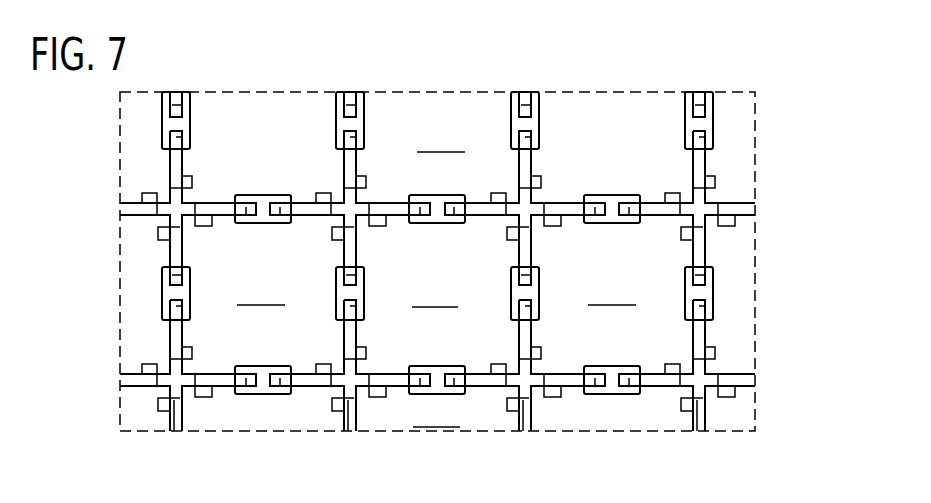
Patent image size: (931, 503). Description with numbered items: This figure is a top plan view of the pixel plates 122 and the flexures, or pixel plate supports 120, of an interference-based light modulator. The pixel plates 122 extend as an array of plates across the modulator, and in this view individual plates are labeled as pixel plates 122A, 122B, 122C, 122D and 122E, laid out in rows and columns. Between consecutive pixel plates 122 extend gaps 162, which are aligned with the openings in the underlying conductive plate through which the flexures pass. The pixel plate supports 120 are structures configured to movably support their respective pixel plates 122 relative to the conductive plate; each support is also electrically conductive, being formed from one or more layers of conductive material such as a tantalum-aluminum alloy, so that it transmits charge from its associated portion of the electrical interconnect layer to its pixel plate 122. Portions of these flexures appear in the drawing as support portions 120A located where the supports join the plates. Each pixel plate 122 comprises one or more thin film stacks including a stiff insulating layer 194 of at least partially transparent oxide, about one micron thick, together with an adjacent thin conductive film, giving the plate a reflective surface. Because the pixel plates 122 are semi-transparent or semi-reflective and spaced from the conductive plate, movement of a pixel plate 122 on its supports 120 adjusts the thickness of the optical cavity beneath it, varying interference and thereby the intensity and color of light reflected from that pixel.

The pixel plate support 120 is at (170, 163).
The grid joint connector 120A is at (400, 215).
The pixel plate 122 is at (748, 145).
The tile A 122A is at (435, 294).
The tile B 122B is at (261, 293).
The tile C 122C is at (441, 140).
The tile D 122D is at (612, 293).
The tile E 122E is at (436, 414).
The gap 162 is at (512, 388).
The stiff insulating layer 194 is at (170, 362).